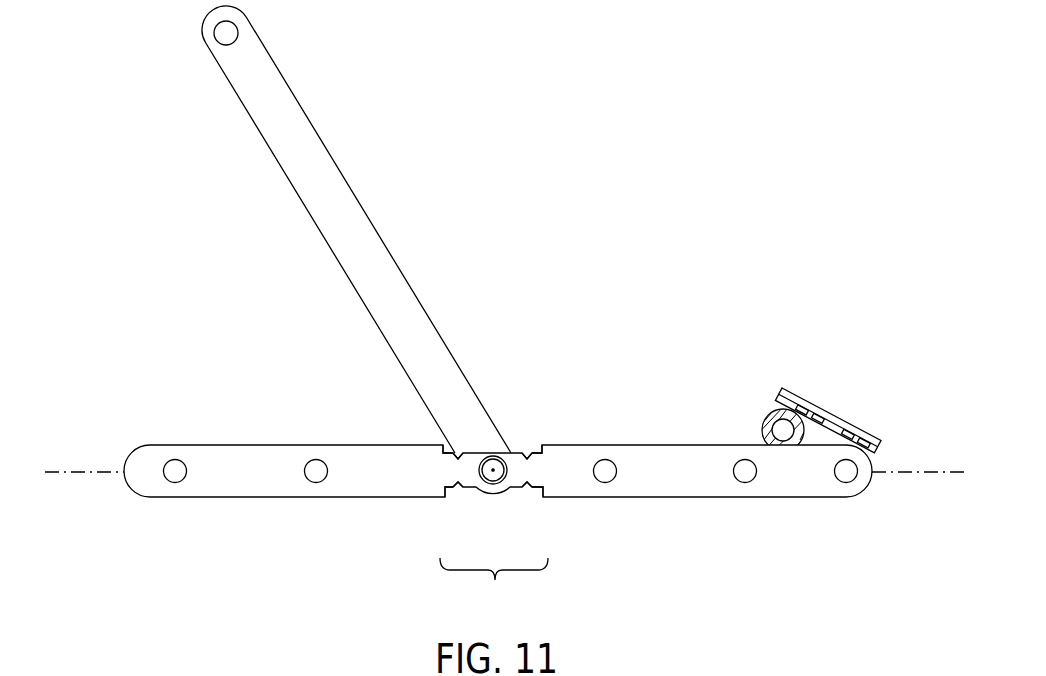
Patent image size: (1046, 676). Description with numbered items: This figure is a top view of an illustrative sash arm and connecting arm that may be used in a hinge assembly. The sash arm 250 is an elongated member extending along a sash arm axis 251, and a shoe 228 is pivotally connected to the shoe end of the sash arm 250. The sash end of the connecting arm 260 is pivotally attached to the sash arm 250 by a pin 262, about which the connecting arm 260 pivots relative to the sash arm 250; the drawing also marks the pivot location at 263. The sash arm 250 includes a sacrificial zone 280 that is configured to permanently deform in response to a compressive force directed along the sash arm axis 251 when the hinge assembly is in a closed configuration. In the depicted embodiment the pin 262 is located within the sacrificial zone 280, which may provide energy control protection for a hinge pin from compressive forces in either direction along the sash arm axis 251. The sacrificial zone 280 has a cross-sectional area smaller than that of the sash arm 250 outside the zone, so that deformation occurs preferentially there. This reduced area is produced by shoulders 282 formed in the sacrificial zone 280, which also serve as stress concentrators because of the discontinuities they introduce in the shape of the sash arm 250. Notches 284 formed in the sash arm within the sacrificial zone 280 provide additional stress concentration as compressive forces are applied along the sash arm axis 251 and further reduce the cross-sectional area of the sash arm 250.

The shoe 228 is at (830, 412).
The sash arm 250 is at (678, 498).
The sash arm axis 251 is at (75, 474).
The connecting arm 260 is at (377, 223).
The pin 262 is at (506, 466).
The pivot center 263 is at (493, 468).
The sacrificial zone 280 is at (494, 585).
The shoulders 282 is at (453, 450).
The notches 284 is at (458, 491).